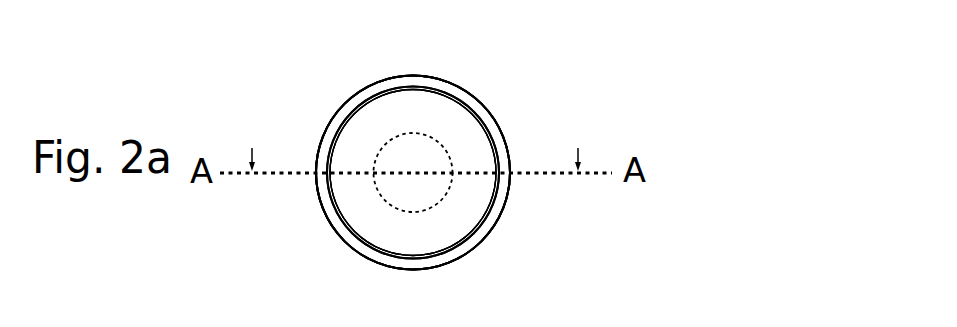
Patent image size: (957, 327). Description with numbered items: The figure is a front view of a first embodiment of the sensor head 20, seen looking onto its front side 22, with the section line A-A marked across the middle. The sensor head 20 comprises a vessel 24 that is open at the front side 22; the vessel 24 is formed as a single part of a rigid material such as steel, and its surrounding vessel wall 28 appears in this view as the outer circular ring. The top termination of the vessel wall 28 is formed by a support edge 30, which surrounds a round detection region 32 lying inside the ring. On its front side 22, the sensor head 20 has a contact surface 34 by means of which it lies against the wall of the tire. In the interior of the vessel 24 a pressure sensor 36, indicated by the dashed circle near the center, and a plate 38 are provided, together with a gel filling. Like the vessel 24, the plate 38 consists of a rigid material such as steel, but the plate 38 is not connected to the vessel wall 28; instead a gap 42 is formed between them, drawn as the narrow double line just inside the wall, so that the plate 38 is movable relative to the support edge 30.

The sensor head 20 is at (490, 97).
The front side 22 is at (651, 314).
The vessel 24 is at (518, 212).
The vessel wall 28 is at (412, 266).
The support edge 30 is at (400, 78).
The detection region 32 is at (377, 237).
The contact surface 34 is at (360, 130).
The pressure sensor 36 is at (433, 200).
The plate 38 is at (432, 107).
The gap 42 is at (497, 160).